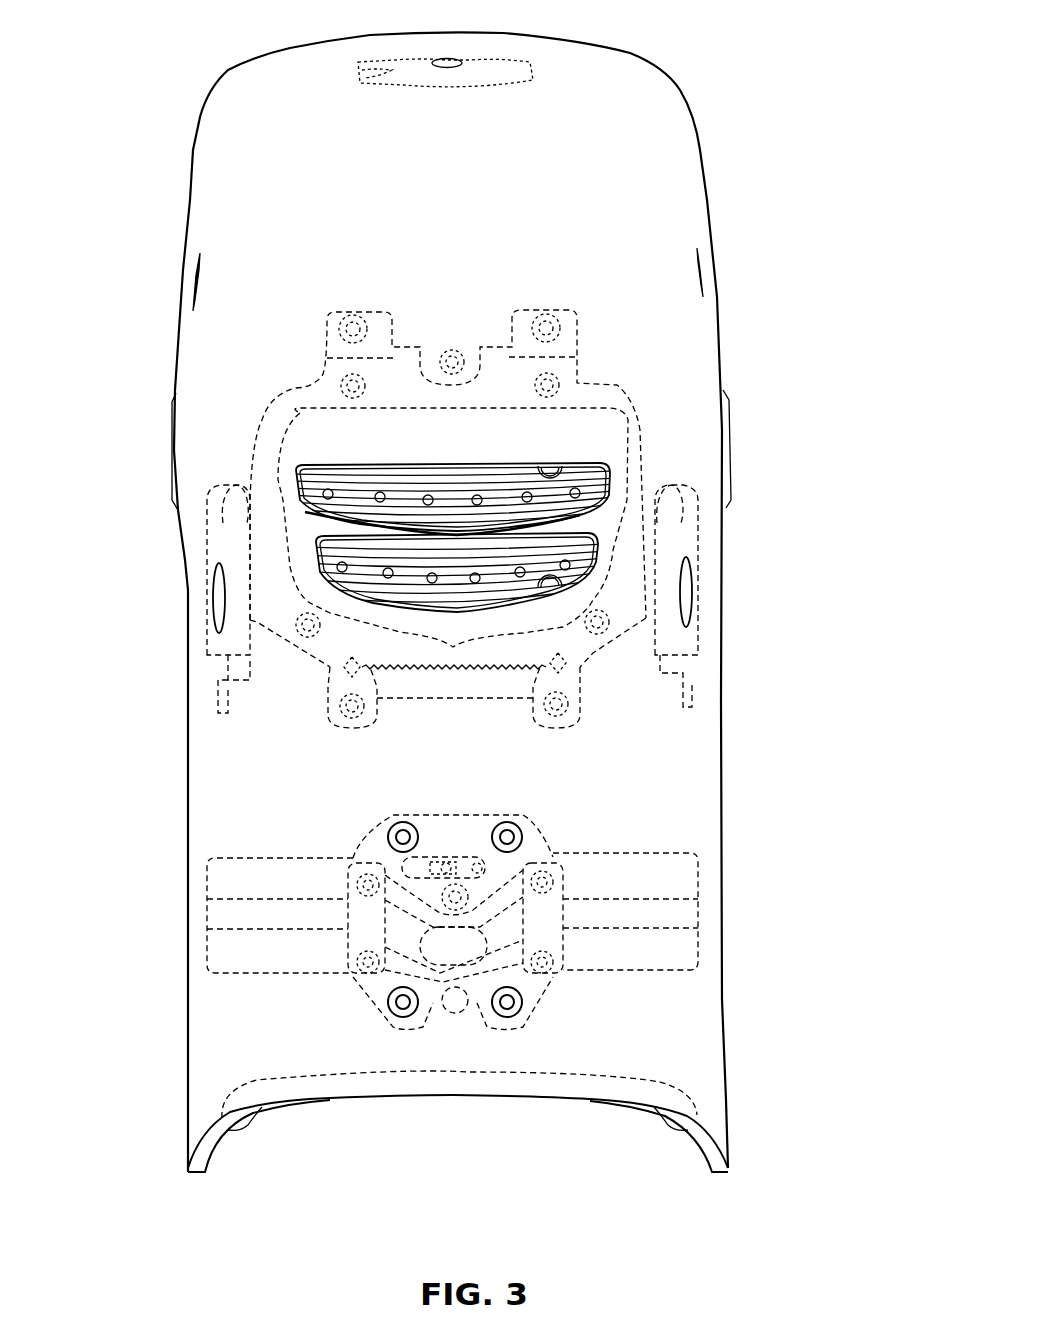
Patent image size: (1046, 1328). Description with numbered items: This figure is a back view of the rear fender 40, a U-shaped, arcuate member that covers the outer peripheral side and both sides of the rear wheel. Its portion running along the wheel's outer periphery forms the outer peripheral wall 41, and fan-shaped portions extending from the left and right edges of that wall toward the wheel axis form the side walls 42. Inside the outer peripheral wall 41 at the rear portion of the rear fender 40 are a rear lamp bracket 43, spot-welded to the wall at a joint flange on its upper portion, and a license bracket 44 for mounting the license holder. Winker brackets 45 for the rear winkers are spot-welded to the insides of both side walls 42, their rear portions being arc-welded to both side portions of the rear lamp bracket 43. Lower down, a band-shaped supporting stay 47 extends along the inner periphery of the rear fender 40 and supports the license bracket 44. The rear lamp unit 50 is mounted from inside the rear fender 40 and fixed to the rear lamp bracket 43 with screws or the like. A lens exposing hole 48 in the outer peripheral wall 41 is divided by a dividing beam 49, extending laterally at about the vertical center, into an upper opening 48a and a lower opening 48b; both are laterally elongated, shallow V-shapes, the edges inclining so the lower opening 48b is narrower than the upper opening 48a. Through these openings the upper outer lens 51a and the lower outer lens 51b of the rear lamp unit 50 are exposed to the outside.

The rear fender 40 is at (675, 72).
The outer peripheral wall 41 is at (543, 185).
The side walls 42 is at (197, 207).
The rear lamp bracket 43 is at (617, 385).
The license bracket 44 is at (548, 978).
The winker brackets 45 is at (207, 538).
The supporting stay 47 is at (672, 853).
The lens exposing hole 48 is at (620, 537).
The upper opening 48a is at (567, 472).
The lower opening 48b is at (568, 592).
The dividing beam 49 is at (563, 530).
The rear lamp unit 50 is at (640, 408).
The upper outer lens 51a is at (525, 462).
The lower outer lens 51b is at (593, 548).